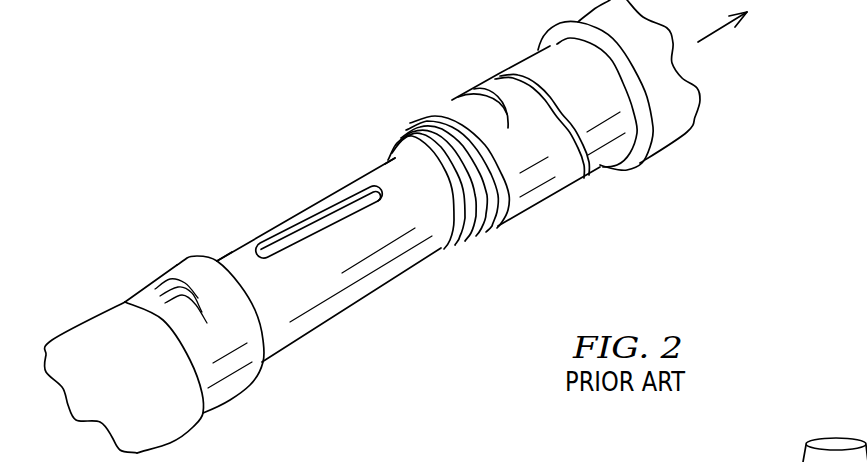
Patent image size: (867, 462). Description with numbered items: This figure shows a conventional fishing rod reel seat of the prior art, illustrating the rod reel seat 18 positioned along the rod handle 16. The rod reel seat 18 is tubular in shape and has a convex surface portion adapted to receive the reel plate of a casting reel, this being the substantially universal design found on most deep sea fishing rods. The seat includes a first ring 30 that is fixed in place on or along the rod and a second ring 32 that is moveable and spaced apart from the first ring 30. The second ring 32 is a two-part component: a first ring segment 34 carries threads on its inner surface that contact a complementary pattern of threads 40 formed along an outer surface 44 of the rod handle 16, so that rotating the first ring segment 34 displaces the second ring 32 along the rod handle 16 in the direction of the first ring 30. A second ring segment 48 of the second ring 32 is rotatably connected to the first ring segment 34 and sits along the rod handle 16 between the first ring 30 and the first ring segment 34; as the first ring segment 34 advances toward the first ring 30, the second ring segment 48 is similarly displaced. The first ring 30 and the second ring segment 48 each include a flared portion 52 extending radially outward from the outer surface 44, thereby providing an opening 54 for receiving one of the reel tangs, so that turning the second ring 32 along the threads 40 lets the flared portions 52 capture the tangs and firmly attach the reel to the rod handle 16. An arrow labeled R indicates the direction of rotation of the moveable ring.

The rod handle 16 is at (223, 108).
The rod reel seat 18 is at (272, 193).
The first ring 30 is at (227, 393).
The second ring 32 is at (467, 70).
The first ring segment 34 is at (594, 172).
The threads 40 is at (447, 243).
The outer surface 44 is at (367, 173).
The second ring segment 48 is at (535, 204).
The flared portion 52 is at (173, 266).
The opening 54 is at (208, 252).
The rotation direction R is at (717, 29).